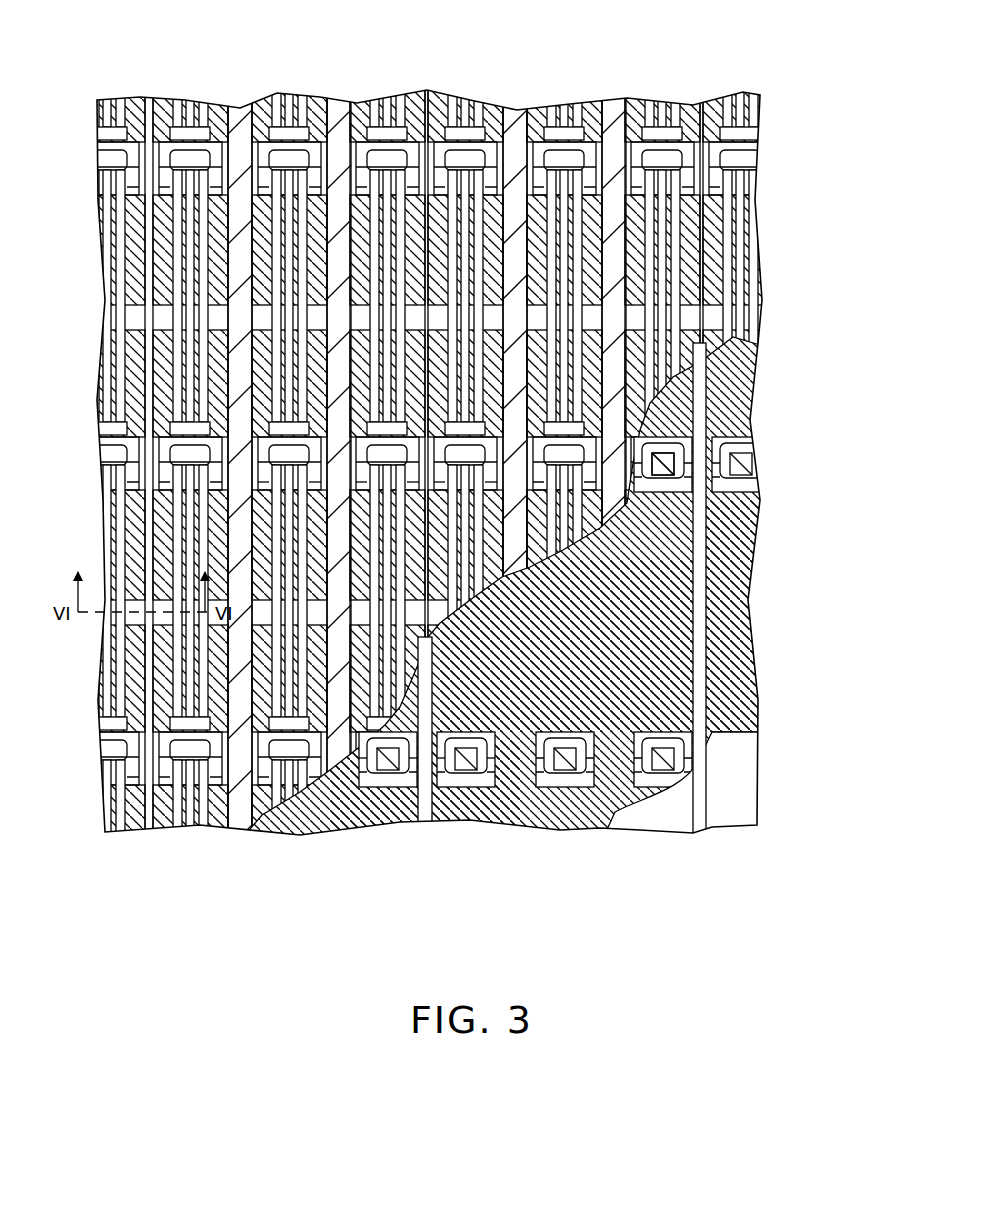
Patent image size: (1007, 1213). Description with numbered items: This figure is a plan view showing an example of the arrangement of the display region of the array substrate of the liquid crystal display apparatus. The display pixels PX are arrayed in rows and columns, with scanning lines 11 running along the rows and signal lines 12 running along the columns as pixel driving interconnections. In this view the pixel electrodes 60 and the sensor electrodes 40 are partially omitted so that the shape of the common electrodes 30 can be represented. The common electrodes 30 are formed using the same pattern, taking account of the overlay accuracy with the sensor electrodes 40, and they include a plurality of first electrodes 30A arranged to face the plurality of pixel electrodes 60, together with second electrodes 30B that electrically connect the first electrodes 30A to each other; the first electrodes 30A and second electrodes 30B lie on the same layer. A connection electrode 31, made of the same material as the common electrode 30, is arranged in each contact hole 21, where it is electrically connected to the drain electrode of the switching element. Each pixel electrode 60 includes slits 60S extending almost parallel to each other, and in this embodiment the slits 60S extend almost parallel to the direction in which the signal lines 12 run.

The display pixel PX is at (387, 86).
The scanning line 11 is at (712, 478).
The signal line 12 is at (707, 825).
The contact hole 21 is at (667, 443).
The common electrode 30 is at (746, 552).
The first electrode 30A is at (613, 680).
The second electrode 30B is at (712, 628).
The connection electrode 31 is at (674, 458).
The sensor electrode 40 is at (515, 127).
The pixel electrode 60 is at (588, 165).
The slit 60S is at (650, 210).